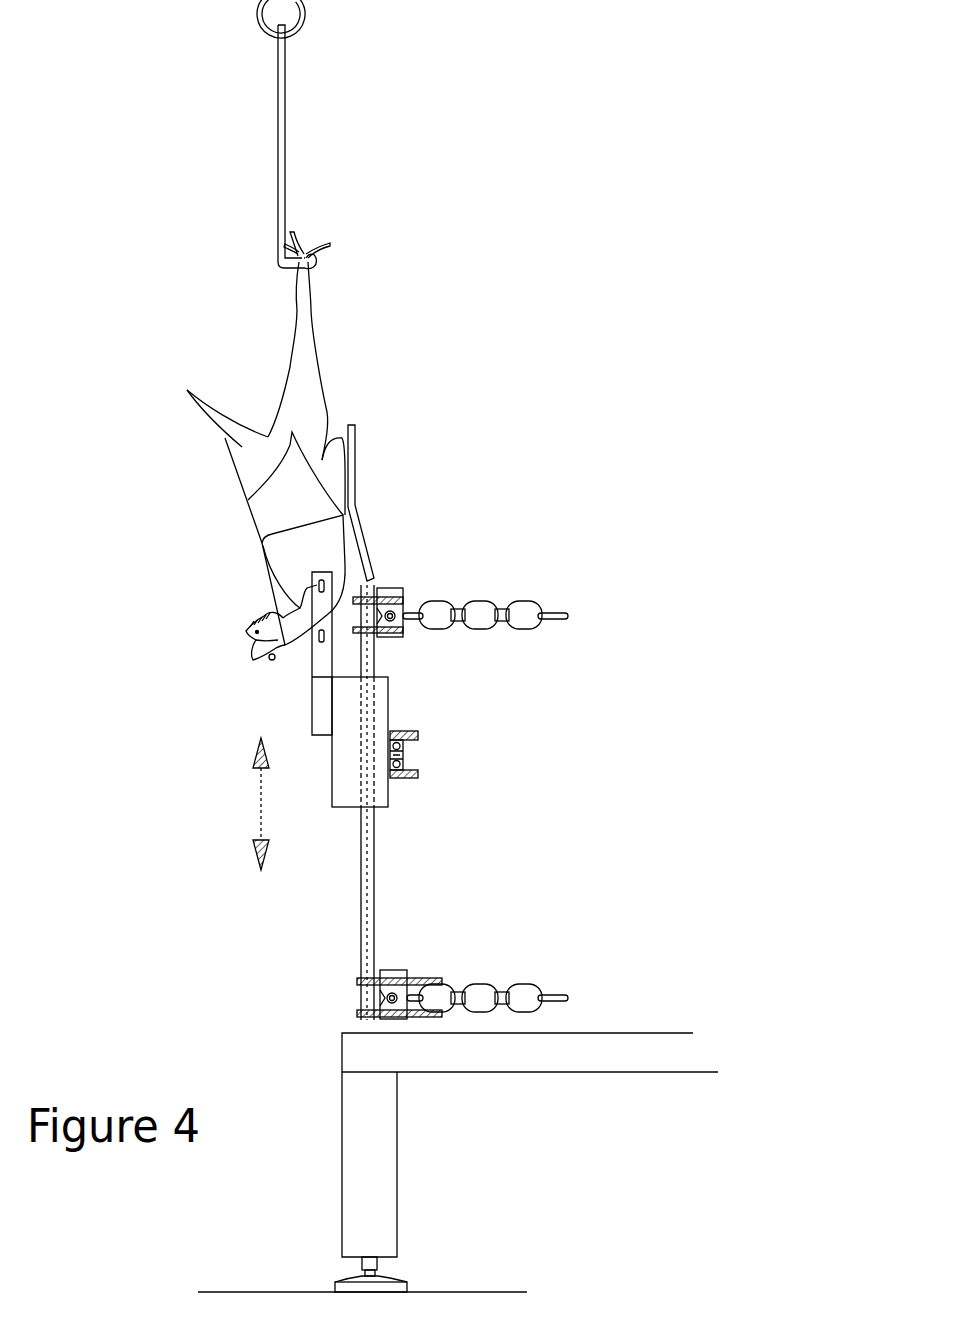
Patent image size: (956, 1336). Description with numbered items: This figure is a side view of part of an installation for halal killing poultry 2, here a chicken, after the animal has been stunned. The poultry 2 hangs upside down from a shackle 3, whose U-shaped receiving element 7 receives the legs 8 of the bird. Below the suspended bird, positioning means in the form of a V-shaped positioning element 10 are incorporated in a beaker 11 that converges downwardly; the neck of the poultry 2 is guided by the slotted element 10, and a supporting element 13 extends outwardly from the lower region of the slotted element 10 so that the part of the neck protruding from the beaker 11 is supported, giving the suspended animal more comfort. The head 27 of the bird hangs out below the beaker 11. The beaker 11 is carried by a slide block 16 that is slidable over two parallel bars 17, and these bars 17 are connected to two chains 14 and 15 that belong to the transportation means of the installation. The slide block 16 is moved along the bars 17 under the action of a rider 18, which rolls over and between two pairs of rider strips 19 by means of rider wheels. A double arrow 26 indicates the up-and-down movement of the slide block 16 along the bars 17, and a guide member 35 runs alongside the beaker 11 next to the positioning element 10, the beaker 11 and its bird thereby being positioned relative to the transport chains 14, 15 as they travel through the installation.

The poultry 2 is at (257, 477).
The shackle 3 is at (276, 152).
The U-shaped receiving element 7 is at (290, 267).
The legs 8 is at (316, 283).
The V-shaped positioning element 10 is at (263, 586).
The beaker 11 is at (256, 557).
The supporting element 13 is at (272, 663).
The chain 14 is at (485, 598).
The chain 15 is at (487, 978).
The slide block 16 is at (338, 812).
The parallel bars 17 is at (378, 866).
The rider 18 is at (405, 752).
The rider strips 19 is at (418, 731).
The vertical movement direction 26 is at (258, 809).
The head 27 is at (245, 636).
The guide rail 35 is at (369, 551).